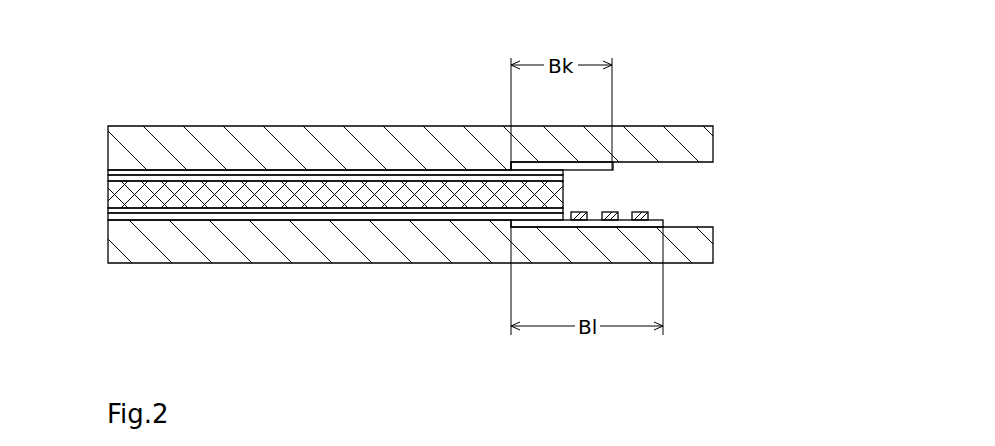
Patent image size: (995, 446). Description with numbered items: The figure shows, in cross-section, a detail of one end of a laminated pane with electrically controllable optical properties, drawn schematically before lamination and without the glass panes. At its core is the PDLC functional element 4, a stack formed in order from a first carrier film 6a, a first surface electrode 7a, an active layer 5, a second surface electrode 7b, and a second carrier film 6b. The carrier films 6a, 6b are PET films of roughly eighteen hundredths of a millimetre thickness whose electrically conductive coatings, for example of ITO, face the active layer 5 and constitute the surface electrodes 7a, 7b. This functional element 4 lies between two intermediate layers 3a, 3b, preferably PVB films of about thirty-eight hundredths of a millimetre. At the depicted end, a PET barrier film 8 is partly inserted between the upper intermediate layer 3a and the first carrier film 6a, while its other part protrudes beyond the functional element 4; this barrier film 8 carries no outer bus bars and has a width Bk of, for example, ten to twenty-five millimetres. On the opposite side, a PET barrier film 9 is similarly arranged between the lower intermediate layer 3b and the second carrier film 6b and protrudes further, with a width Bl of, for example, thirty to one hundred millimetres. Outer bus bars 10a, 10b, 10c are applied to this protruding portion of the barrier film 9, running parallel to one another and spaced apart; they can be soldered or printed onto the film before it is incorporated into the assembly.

The intermediate layer 3a is at (325, 138).
The intermediate layer 3b is at (322, 252).
The functional element 4 is at (47, 137).
The active layer 5 is at (106, 195).
The first carrier film 6a is at (106, 171).
The second carrier film 6b is at (106, 217).
The first surface electrode 7a is at (106, 178).
The surface electrode 7b is at (106, 211).
The PET barrier film 8 is at (599, 167).
The PET barrier film 9 is at (664, 222).
The outer bus bar 10a is at (579, 212).
The outer bus bar 10b is at (610, 212).
The outer bus bar 10c is at (640, 212).